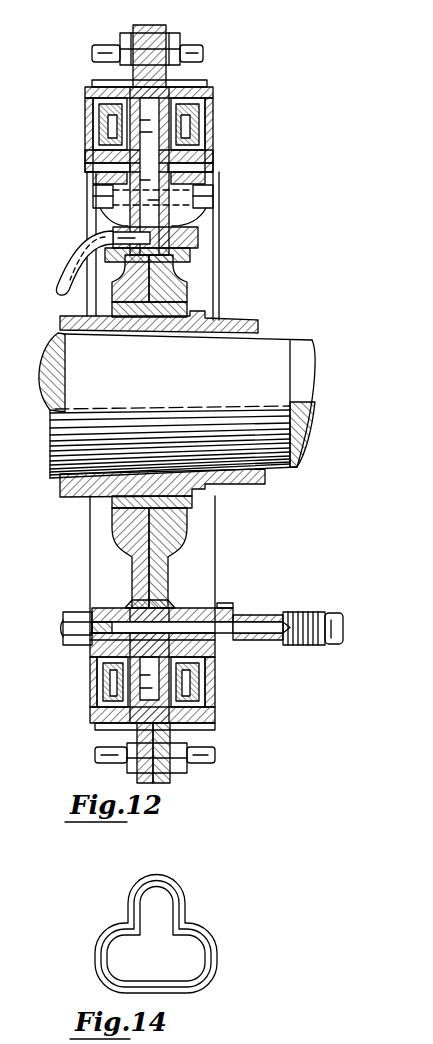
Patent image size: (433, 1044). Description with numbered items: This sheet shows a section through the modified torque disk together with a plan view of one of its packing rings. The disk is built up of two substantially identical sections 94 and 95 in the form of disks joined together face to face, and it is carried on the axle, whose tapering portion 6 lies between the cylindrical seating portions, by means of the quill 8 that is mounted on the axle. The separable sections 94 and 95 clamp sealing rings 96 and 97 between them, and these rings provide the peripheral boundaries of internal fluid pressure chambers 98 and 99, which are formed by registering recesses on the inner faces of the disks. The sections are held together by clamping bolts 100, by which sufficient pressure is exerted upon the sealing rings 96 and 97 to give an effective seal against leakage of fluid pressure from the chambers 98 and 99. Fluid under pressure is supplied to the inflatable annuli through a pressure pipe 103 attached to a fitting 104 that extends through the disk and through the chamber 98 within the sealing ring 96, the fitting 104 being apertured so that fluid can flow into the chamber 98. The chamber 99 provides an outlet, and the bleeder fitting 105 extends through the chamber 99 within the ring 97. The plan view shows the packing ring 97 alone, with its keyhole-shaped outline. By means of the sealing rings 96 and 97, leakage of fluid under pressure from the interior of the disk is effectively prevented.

In FIG. 12, the tapering portion 6 is at (272, 340).
In FIG. 12, the quill 8 is at (72, 496).
In FIG. 12, the disk section 94 is at (112, 292).
In FIG. 12, the disk section 95 is at (190, 292).
In FIG. 12, the sealing ring 96 is at (213, 90).
In FIG. 12, the sealing ring 97 is at (165, 606).
In FIG. 14, the sealing ring 97 is at (200, 925).
In FIG. 12, the fluid pressure chamber 98 is at (94, 188).
In FIG. 12, the fluid pressure chamber 99 is at (216, 655).
In FIG. 12, the clamping bolt 100 is at (213, 196).
In FIG. 12, the pressure pipe 103 is at (62, 258).
In FIG. 12, the fitting 104 is at (113, 236).
In FIG. 12, the bleeder fitting 105 is at (265, 615).